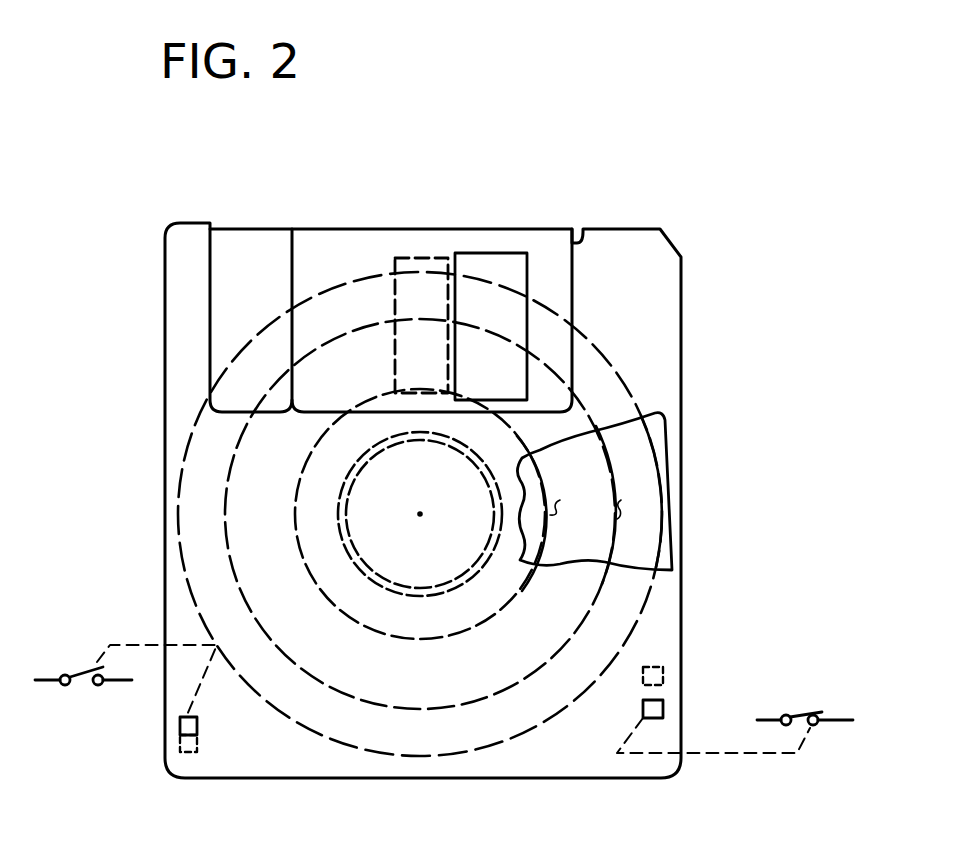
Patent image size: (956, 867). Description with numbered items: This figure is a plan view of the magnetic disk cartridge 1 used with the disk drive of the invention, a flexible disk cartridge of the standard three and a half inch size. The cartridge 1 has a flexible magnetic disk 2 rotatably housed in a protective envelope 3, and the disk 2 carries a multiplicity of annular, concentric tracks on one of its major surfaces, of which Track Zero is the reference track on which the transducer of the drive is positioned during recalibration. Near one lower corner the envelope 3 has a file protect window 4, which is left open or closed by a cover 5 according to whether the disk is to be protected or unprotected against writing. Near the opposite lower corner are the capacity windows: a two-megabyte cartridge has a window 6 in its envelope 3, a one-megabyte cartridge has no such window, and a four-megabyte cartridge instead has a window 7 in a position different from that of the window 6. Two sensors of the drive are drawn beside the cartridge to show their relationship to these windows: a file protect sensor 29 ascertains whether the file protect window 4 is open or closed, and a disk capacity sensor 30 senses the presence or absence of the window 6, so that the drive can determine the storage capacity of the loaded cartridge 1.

The disk cartridge 1 is at (692, 487).
The flexible magnetic disk 2 is at (656, 447).
The protective envelope 3 is at (684, 543).
The file protect window 4 is at (180, 727).
The cover 5 is at (180, 742).
The window 6 is at (663, 710).
The window 7 is at (664, 680).
The file protect sensor 29 is at (80, 674).
The disk capacity sensor 30 is at (812, 727).